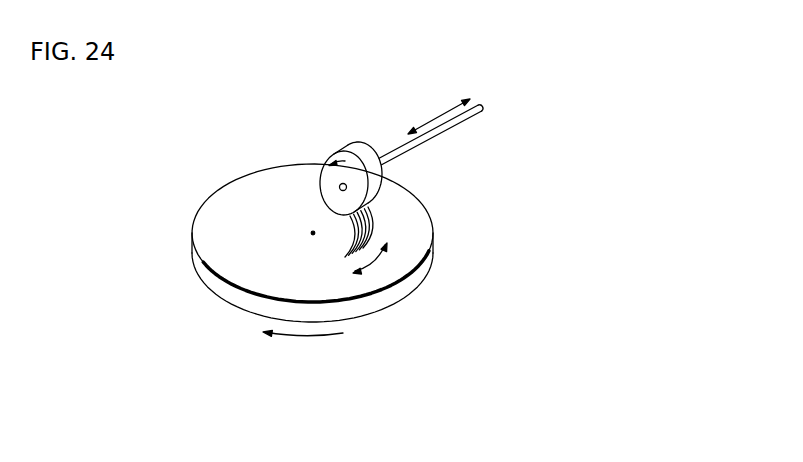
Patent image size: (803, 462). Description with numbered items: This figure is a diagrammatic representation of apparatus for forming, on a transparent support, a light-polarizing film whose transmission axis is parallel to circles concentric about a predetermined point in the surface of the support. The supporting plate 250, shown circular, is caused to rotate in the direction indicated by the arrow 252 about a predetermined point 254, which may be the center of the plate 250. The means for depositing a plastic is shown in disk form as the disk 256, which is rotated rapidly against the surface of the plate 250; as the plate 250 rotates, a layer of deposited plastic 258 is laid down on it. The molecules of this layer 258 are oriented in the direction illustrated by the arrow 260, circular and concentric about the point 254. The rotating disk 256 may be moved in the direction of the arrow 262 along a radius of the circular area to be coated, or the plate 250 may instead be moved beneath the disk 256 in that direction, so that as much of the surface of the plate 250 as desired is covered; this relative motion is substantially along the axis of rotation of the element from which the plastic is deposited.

The supporting plate 250 is at (210, 265).
The arrow 252 is at (313, 337).
The predetermined point 254 is at (313, 233).
The disk 256 is at (366, 182).
The layer of deposited plastic 258 is at (373, 227).
The arrow 260 is at (373, 262).
The arrow 262 is at (440, 117).